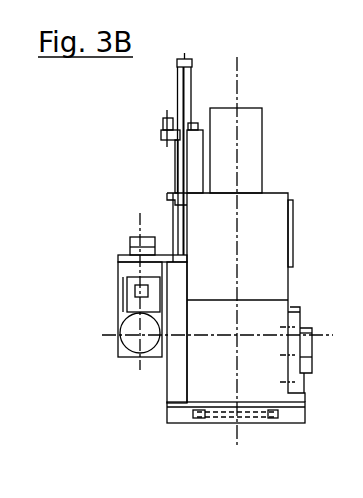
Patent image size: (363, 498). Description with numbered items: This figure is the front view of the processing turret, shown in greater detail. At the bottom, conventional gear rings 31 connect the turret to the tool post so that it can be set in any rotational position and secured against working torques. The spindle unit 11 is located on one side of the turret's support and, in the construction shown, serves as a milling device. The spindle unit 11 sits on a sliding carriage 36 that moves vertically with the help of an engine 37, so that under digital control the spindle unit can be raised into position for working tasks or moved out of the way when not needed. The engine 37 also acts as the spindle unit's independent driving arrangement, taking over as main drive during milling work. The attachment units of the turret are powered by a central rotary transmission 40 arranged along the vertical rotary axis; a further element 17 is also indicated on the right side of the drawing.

The central rotary transmission 40 is at (243, 117).
The sliding carriage 36 is at (168, 268).
The engine 37 is at (137, 262).
The spindle unit 11 is at (127, 268).
The stop member 17 is at (288, 320).
The gear rings 31 is at (277, 413).